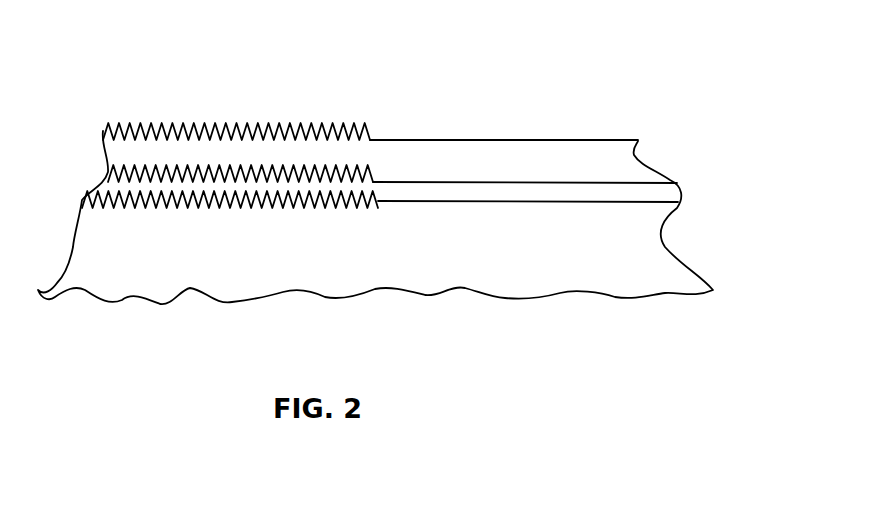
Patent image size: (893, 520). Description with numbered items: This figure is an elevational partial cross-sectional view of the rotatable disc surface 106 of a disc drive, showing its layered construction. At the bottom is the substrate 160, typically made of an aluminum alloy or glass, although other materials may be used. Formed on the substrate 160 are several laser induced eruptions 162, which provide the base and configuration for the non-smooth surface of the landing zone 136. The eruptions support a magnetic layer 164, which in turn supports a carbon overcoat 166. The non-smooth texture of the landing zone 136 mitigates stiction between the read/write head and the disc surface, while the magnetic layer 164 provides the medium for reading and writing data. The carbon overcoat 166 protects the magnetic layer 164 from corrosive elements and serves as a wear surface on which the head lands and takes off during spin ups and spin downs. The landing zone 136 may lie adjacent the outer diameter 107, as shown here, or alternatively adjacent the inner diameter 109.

The rotatable disc surface 106 is at (386, 50).
The outer diameter 107 is at (182, 83).
The inner diameter 109 is at (655, 84).
The landing zone 136 is at (160, 113).
The substrate 160 is at (630, 268).
The laser induced eruptions 162 is at (247, 197).
The magnetic layer 164 is at (605, 195).
The carbon overcoat 166 is at (394, 140).